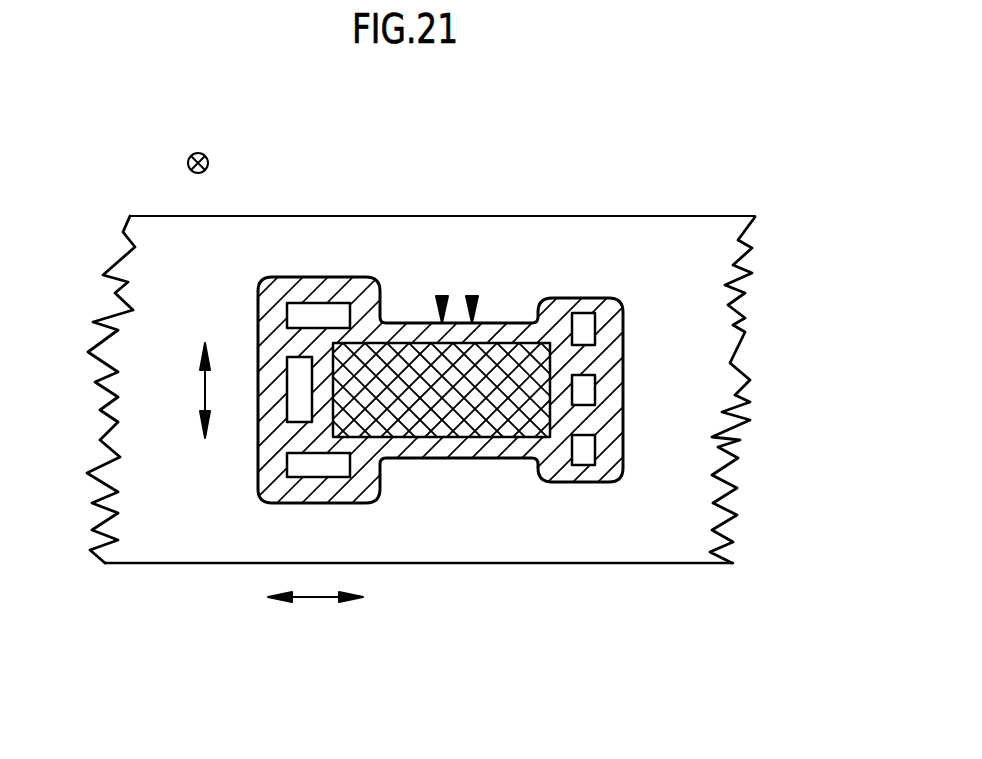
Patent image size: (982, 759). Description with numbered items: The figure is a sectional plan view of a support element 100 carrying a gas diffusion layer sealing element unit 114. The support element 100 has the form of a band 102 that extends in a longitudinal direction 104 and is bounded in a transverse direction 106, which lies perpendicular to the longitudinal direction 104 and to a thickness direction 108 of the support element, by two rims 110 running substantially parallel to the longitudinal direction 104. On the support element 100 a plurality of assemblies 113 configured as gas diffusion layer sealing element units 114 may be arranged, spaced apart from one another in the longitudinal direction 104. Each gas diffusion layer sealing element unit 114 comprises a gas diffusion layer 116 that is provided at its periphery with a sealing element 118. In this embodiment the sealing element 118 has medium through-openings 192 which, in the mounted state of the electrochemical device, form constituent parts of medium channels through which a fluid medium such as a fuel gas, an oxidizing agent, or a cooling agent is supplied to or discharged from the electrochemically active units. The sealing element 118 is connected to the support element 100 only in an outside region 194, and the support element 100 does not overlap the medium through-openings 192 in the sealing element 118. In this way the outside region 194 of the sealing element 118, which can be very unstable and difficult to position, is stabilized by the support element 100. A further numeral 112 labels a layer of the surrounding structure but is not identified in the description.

The support element 100 is at (710, 270).
The band 102 is at (710, 353).
The longitudinal direction 104 is at (315, 597).
The transverse direction 106 is at (205, 390).
The thickness direction 108 is at (199, 152).
The rims 110 is at (727, 217).
The intermediate layer 112 is at (700, 398).
The assemblies 113 is at (442, 305).
The gas diffusion layer sealing element unit 114 is at (472, 305).
The gas diffusion layer 116 is at (398, 372).
The sealing element 118 is at (480, 333).
The medium through-openings 192 is at (323, 320).
The outside region 194 is at (287, 285).